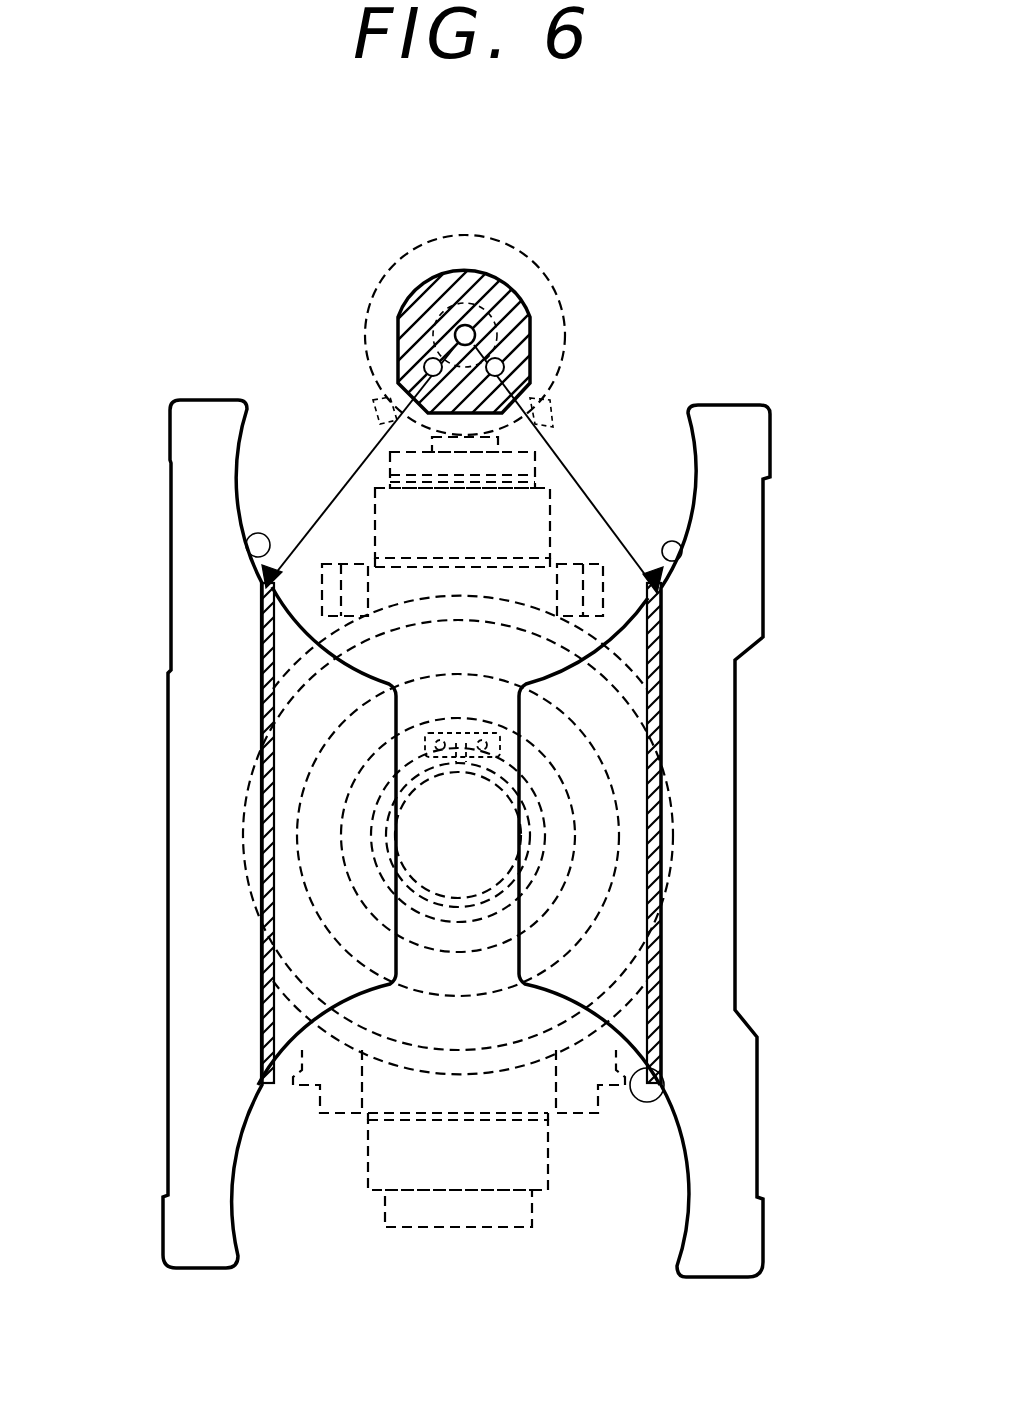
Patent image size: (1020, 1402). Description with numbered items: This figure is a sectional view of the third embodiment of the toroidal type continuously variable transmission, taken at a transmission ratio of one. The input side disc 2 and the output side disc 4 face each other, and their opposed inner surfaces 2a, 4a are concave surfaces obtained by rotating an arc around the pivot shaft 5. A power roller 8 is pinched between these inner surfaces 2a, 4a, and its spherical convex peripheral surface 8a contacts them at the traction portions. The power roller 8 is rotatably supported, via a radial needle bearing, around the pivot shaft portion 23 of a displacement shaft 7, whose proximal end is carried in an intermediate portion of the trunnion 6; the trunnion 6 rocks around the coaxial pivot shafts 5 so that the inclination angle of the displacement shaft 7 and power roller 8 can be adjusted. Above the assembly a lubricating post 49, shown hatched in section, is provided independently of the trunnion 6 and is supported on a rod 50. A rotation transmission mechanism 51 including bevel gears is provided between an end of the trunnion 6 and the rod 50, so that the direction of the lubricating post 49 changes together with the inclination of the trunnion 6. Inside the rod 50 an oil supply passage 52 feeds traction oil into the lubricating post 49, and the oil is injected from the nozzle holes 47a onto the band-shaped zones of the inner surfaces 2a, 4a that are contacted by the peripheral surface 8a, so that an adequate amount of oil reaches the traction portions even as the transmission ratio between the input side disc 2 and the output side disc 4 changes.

The input side disc 2 is at (195, 408).
The inner surface of input side disc 2a is at (250, 533).
The output side disc 4 is at (735, 408).
The inner surface of output side disc 4a is at (690, 542).
The pivot shaft 5 is at (545, 520).
The trunnion 6 is at (667, 613).
The displacement shaft 7 is at (488, 818).
The power roller 8 is at (305, 770).
The peripheral surface of power roller 8a is at (625, 713).
The pivot shaft portion 23 is at (488, 852).
The nozzle hole 47a is at (428, 370).
The lubricating post 49 is at (432, 300).
The rod 50 is at (510, 262).
The rotation transmission mechanism 51 is at (569, 292).
The oil supply passage 52 is at (455, 333).